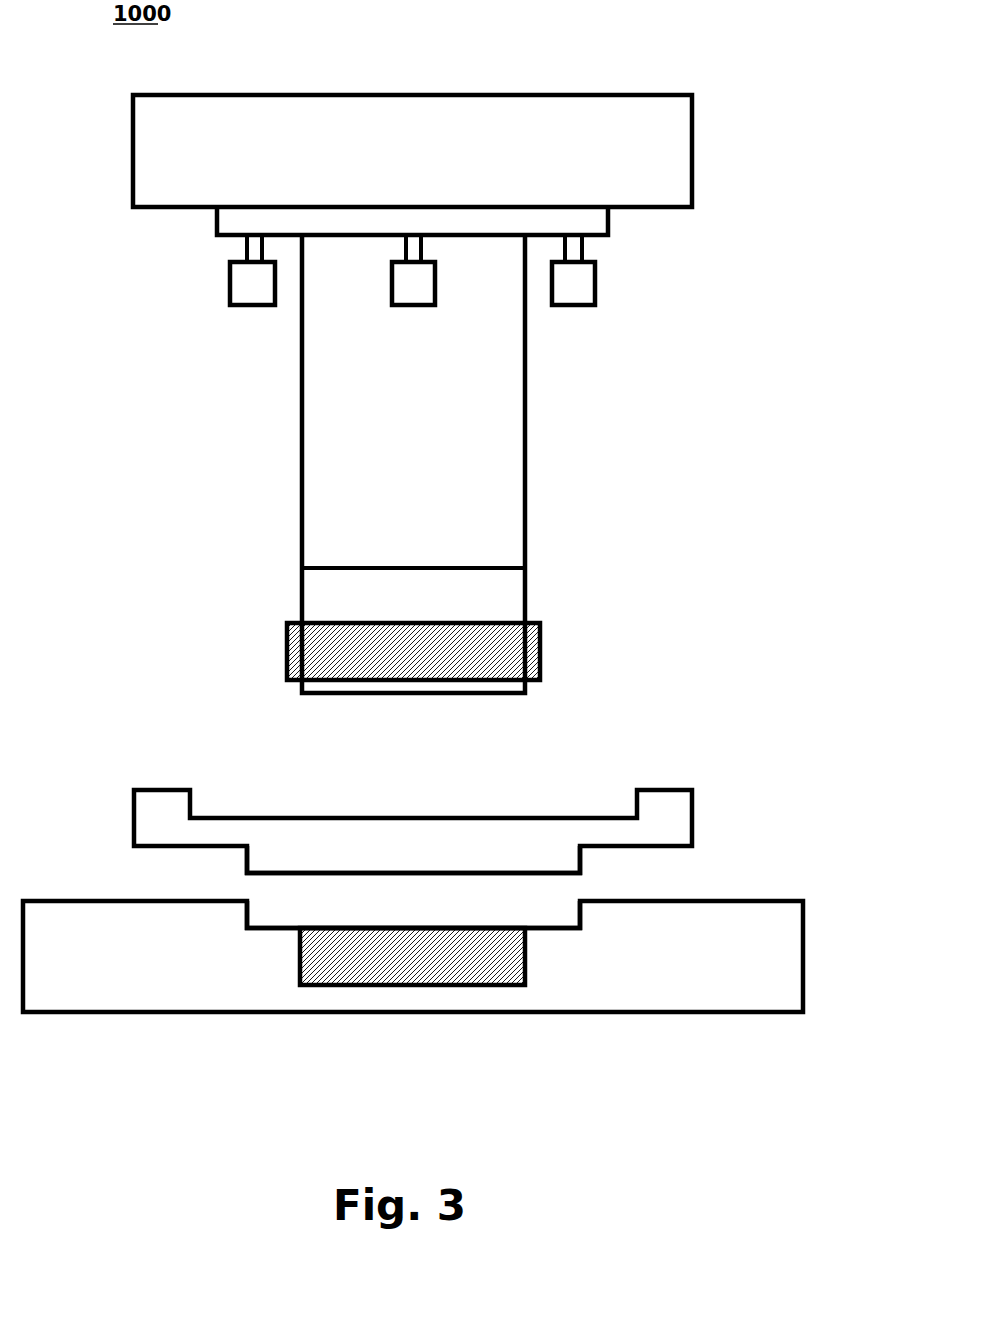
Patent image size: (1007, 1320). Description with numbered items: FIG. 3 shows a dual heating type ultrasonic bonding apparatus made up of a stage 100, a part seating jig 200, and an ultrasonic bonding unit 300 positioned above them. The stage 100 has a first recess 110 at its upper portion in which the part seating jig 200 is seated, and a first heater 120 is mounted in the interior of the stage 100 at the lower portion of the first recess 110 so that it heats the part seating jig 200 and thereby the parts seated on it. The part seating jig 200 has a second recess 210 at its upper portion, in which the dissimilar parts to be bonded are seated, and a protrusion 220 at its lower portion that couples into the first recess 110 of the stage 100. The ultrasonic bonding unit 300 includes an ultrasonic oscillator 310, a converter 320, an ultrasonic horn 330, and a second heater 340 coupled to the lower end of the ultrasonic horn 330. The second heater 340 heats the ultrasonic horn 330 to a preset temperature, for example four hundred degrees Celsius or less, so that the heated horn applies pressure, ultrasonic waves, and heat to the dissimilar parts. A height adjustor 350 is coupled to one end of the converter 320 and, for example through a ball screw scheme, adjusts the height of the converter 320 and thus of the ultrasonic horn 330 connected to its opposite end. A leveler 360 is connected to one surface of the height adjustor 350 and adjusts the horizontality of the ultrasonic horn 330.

The ultrasonic bonding unit 300 is at (585, 87).
The ultrasonic oscillator 310 is at (663, 152).
The converter 320 is at (495, 390).
The ultrasonic horn 330 is at (495, 595).
The second heater 340 is at (495, 650).
The height adjustor 350 is at (580, 220).
The leveler 360 is at (580, 290).
The part seating jig 200 is at (663, 817).
The second recess 210 is at (548, 796).
The protrusion 220 is at (545, 865).
The stage 100 is at (727, 957).
The first recess 110 is at (290, 905).
The first heater 120 is at (438, 957).